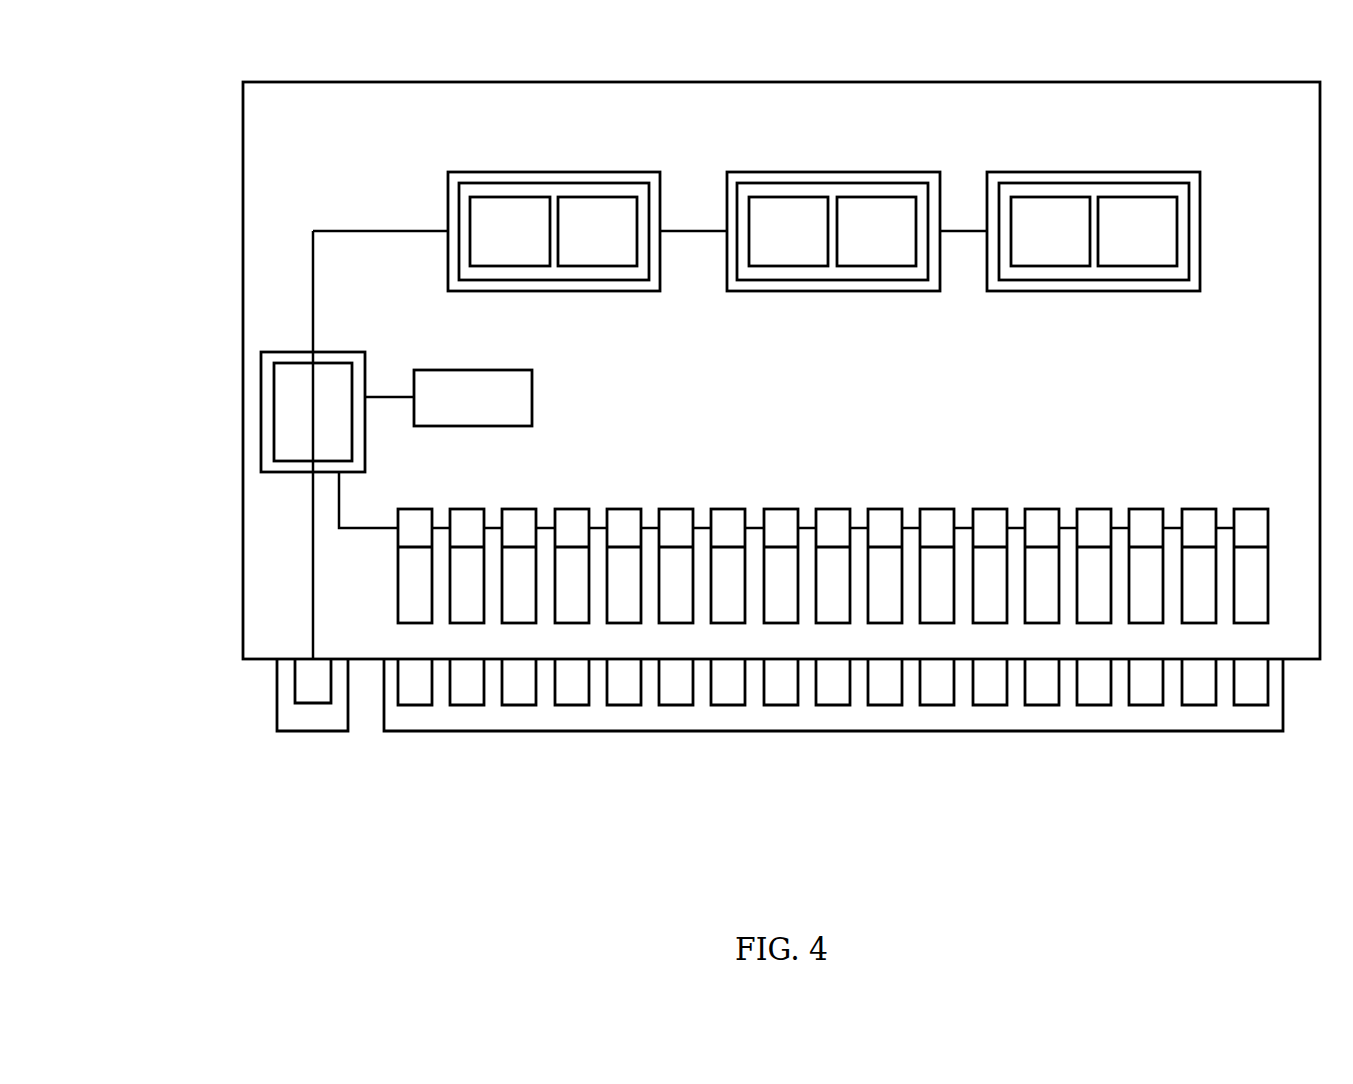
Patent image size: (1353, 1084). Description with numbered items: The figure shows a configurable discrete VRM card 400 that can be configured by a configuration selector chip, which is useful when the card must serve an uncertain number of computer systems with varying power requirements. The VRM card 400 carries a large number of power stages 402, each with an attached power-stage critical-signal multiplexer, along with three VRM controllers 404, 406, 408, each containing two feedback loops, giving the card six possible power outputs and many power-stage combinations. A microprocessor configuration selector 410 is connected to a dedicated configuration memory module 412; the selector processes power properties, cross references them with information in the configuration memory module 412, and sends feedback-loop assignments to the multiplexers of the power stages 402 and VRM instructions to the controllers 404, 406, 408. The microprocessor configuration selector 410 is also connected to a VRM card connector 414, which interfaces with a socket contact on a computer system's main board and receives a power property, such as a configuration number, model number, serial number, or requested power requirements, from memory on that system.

The VRM card 400 is at (215, 110).
The power stages 402 is at (842, 470).
The VRM controller 404 is at (555, 191).
The VRM controller 406 is at (835, 191).
The VRM controller 408 is at (1095, 191).
The microprocessor configuration selector 410 is at (343, 372).
The configuration memory module 412 is at (514, 403).
The VRM card connector 414 is at (315, 690).